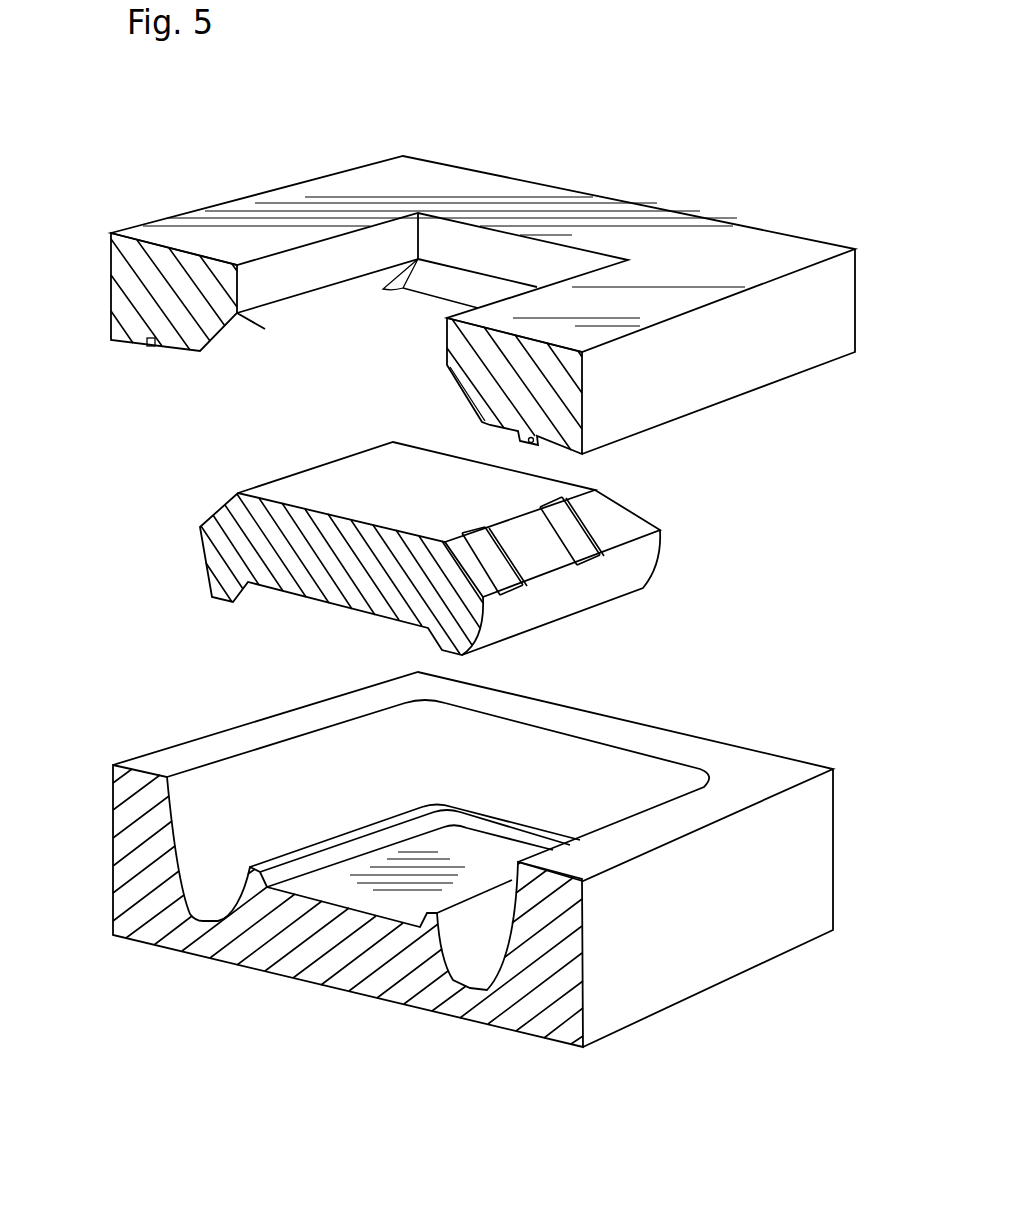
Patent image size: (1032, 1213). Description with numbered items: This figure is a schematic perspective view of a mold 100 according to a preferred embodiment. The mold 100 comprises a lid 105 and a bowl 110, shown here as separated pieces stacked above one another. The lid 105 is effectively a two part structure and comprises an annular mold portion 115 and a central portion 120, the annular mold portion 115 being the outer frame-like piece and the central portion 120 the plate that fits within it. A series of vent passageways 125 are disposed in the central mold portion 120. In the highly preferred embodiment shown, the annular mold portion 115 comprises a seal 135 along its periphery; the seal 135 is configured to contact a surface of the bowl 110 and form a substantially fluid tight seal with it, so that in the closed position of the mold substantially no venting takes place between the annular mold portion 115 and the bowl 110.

The mold 100 is at (569, 123).
The lid 105 is at (853, 213).
The bowl 110 is at (710, 950).
The annular mold portion 115 is at (375, 188).
The central portion 120 is at (633, 582).
The vent passageways 125 is at (570, 533).
The seal 135 is at (152, 348).